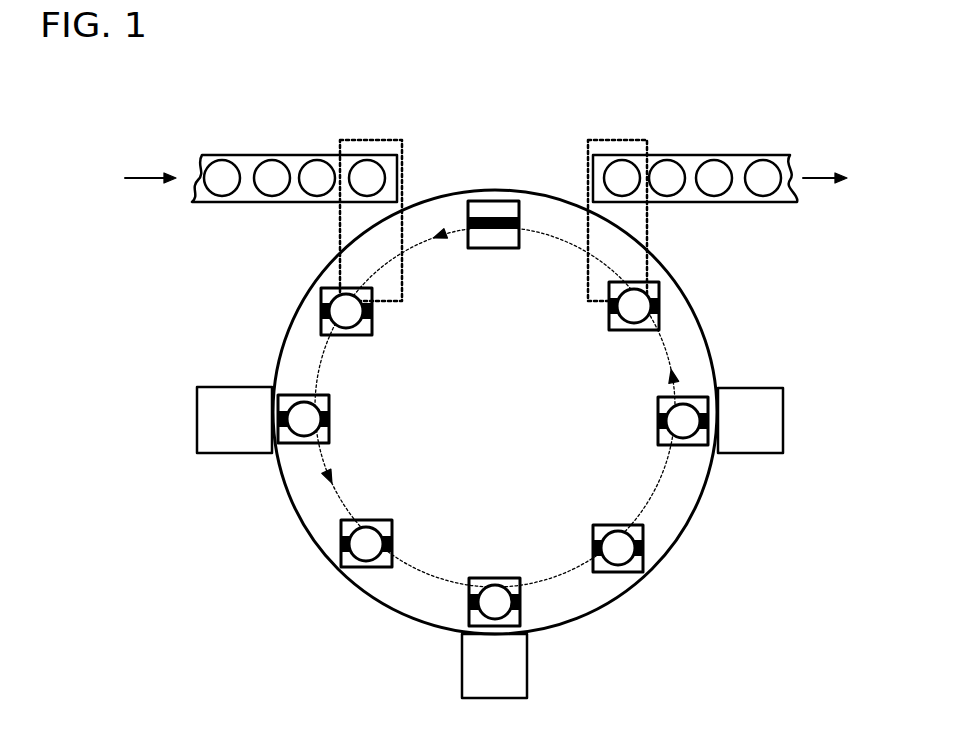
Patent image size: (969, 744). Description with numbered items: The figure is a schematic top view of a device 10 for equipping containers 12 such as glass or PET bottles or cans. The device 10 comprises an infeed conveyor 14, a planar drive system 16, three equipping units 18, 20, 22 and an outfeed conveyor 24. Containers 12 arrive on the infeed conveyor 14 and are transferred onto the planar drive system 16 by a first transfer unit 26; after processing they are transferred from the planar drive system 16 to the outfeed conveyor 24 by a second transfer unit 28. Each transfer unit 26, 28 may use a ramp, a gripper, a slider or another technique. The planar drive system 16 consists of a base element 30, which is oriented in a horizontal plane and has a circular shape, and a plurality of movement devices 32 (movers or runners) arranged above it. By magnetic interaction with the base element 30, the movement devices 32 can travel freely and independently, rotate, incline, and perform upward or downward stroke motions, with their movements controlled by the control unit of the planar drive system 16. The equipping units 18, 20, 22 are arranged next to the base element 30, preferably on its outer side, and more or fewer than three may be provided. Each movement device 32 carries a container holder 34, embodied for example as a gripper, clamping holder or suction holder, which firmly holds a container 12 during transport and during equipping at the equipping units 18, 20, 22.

The device 10 is at (505, 60).
The containers 12 is at (352, 190).
The infeed conveyor 14 is at (202, 153).
The planar drive system 16 is at (232, 560).
The equipping unit 18 is at (197, 407).
The equipping unit 20 is at (462, 677).
The equipping unit 22 is at (785, 420).
The outfeed conveyor 24 is at (787, 153).
The first transfer unit 26 is at (358, 140).
The second transfer unit 28 is at (647, 143).
The base element 30 is at (372, 605).
The movement devices 32 is at (497, 205).
The container holder 34 is at (482, 215).